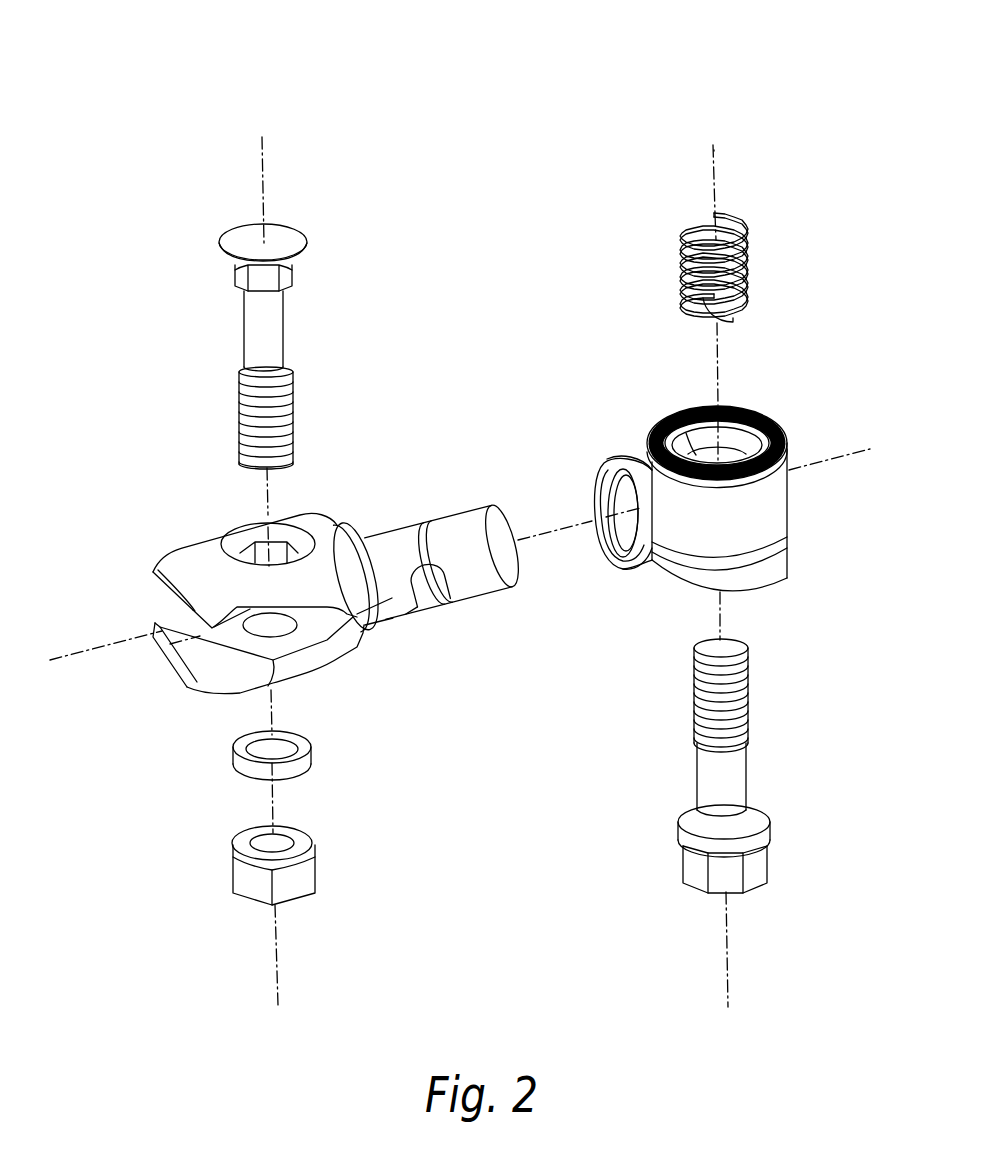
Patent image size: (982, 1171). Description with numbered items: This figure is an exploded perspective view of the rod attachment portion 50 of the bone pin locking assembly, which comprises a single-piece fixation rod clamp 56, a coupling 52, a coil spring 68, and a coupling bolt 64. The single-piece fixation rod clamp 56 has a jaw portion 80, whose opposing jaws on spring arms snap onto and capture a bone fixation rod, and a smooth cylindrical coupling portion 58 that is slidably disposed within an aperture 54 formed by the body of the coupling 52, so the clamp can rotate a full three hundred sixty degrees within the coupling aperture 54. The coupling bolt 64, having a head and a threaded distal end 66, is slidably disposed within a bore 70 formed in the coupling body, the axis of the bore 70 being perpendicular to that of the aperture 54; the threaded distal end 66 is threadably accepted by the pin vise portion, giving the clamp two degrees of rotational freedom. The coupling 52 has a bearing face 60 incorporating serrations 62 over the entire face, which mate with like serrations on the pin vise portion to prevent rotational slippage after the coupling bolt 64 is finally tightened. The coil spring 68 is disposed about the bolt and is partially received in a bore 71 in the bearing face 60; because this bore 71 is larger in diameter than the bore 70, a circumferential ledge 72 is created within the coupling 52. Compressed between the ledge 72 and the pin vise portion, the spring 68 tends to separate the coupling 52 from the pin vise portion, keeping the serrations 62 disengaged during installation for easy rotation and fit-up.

The rod attachment portion 50 is at (789, 79).
The coupling 52 is at (790, 490).
The aperture 54 is at (600, 538).
The single-piece fixation rod clamp 56 is at (174, 346).
The cylindrical coupling portion 58 is at (445, 509).
The bearing face 60 is at (747, 409).
The serrations 62 is at (723, 388).
The coupling bolt 64 is at (800, 766).
The threaded distal end 66 is at (748, 697).
The coil spring 68 is at (680, 276).
The bore 70 is at (770, 418).
The bore 71 is at (689, 387).
The circumferential ledge 72 is at (663, 425).
The jaw portion 80 is at (217, 603).